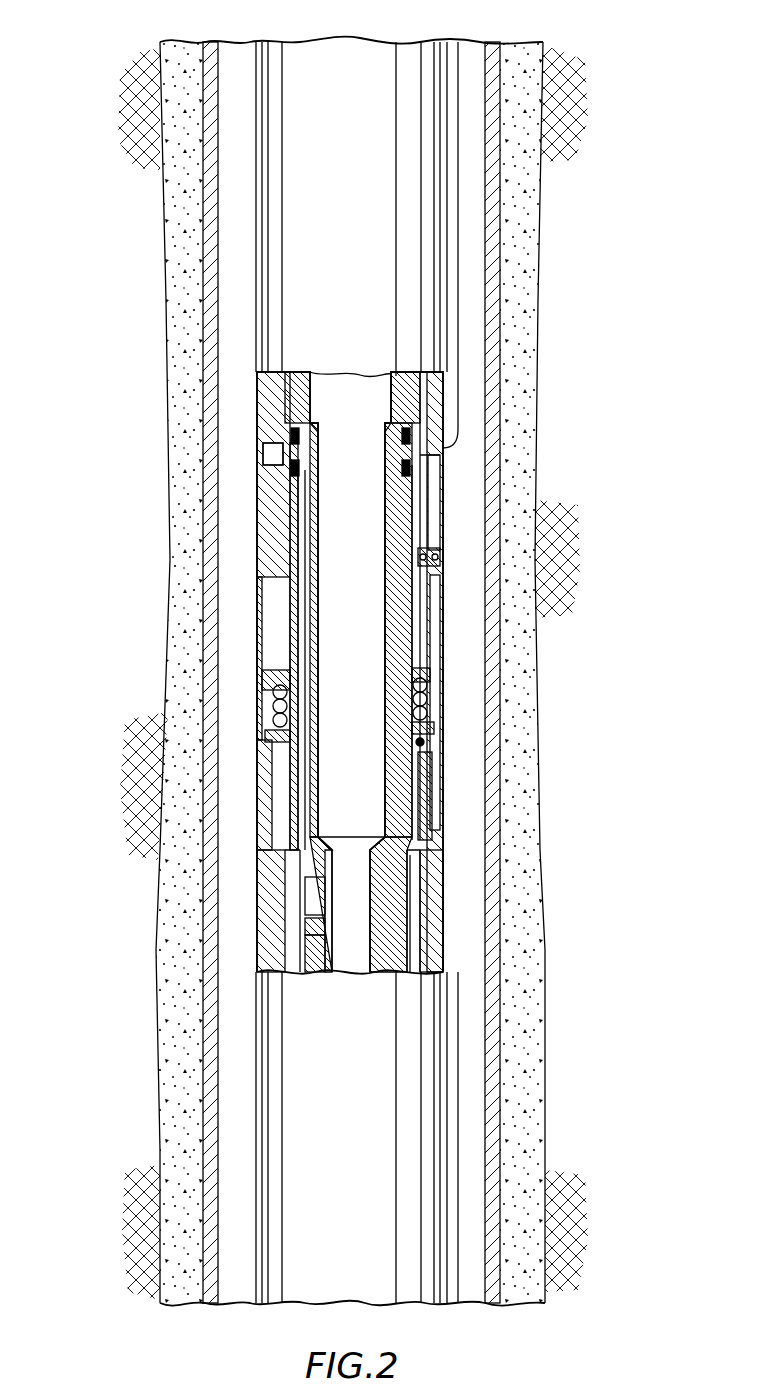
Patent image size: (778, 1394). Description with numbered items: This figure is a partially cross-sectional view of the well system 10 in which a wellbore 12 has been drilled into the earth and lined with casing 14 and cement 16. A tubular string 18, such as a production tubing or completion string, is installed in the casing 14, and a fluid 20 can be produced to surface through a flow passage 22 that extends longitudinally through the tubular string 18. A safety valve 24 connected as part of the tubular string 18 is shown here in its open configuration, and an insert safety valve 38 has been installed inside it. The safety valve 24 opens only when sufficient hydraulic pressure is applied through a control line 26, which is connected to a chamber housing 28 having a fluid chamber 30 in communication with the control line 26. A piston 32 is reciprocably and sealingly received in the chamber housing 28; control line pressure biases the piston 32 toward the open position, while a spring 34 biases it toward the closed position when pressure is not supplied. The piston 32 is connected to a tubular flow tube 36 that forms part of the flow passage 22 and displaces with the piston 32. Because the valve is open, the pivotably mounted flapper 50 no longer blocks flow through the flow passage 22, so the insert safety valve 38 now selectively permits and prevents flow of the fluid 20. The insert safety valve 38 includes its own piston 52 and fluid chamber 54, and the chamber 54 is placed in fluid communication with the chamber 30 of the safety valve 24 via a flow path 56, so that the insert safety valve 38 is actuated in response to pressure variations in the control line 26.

The system 10 is at (652, 80).
The wellbore 12 is at (157, 270).
The casing 14 is at (203, 229).
The cement 16 is at (160, 332).
The tubular string 18 is at (458, 1072).
The fluid 20 is at (352, 777).
The flow passage 22 is at (343, 392).
The safety valve 24 is at (258, 531).
The control line 26 is at (458, 212).
The chamber housing 28 is at (264, 447).
The fluid chamber 30 is at (265, 467).
The piston 32 is at (440, 553).
The spring 34 is at (430, 699).
The flow tube 36 is at (440, 741).
The insert safety valve 38 is at (410, 903).
The flapper 50 is at (440, 783).
The piston 52 is at (305, 937).
The fluid chamber 54 is at (305, 903).
The flow path 56 is at (298, 494).